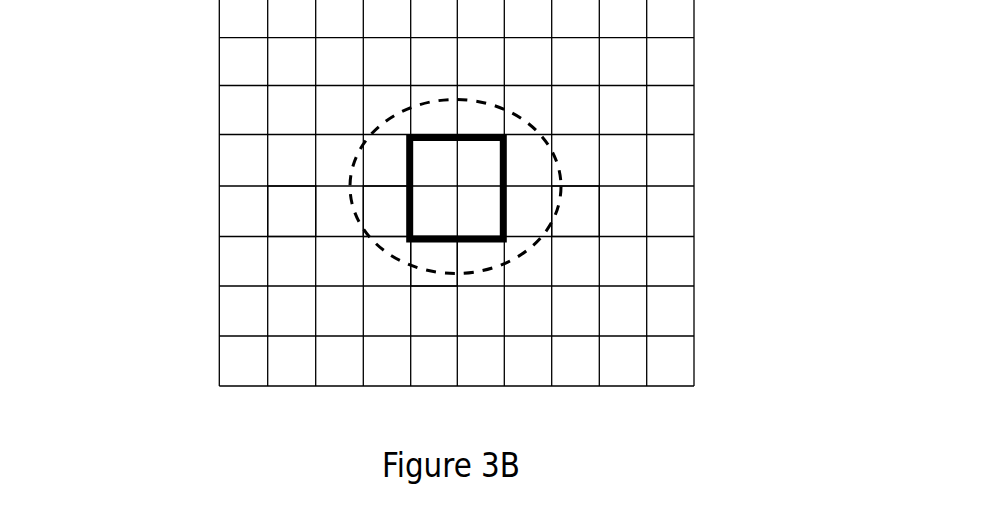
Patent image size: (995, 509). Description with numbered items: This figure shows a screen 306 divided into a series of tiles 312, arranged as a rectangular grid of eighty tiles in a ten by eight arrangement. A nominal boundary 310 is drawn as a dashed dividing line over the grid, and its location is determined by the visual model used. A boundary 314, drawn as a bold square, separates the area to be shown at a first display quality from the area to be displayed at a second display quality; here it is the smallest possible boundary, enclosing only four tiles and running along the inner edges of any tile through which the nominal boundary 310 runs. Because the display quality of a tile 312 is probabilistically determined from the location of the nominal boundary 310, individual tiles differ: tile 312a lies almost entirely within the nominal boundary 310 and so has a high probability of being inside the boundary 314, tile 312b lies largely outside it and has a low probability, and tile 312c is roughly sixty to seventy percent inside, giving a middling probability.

The screen 306 is at (693, 258).
The nominal boundary 310 is at (350, 157).
The tile 312 is at (290, 228).
The tile 312a is at (390, 212).
The tile 312b is at (579, 202).
The tile 312c is at (433, 258).
The boundary 314 is at (508, 157).